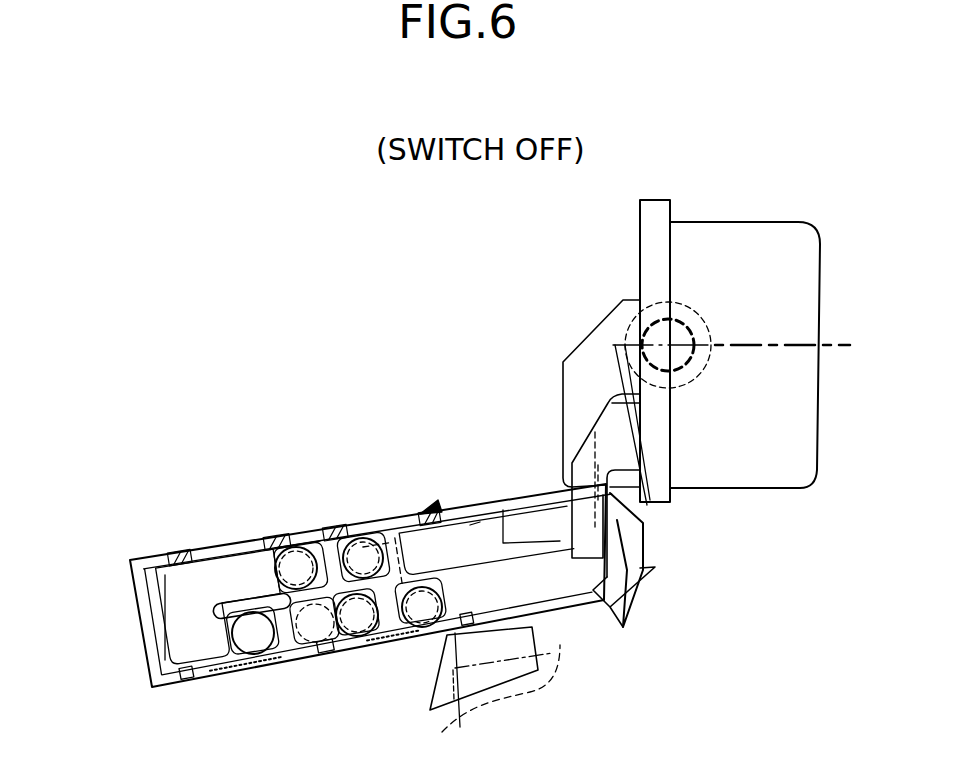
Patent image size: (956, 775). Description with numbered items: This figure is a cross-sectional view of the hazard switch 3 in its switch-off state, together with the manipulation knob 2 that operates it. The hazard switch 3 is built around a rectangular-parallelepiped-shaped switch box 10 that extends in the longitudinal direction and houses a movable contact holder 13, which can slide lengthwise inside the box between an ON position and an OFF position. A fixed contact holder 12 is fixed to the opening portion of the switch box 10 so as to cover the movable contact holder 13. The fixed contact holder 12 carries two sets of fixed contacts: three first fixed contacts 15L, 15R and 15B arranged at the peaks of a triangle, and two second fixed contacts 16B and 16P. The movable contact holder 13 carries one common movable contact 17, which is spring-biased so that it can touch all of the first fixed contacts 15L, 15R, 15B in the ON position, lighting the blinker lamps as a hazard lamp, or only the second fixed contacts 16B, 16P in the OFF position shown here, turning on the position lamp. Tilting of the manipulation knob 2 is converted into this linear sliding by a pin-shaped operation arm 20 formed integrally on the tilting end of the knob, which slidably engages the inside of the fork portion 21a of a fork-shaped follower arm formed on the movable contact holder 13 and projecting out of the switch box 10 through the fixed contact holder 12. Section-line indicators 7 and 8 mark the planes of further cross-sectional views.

The manipulation knob 2 is at (734, 240).
The hazard switch 3 is at (236, 541).
The section line 7 is at (125, 595).
The section line 8 is at (125, 655).
The switch box 10 is at (287, 540).
The fixed contact holder 12 is at (204, 650).
The movable contact holder 13 is at (472, 523).
The first fixed contact 15B is at (303, 560).
The first fixed contact 15L is at (255, 645).
The first fixed contact 15R is at (357, 625).
The second fixed contact 16B is at (366, 553).
The second fixed contact 16P is at (422, 612).
The common movable contact 17 is at (290, 603).
The operation arm 20 is at (582, 516).
The fork portion 21a is at (547, 530).